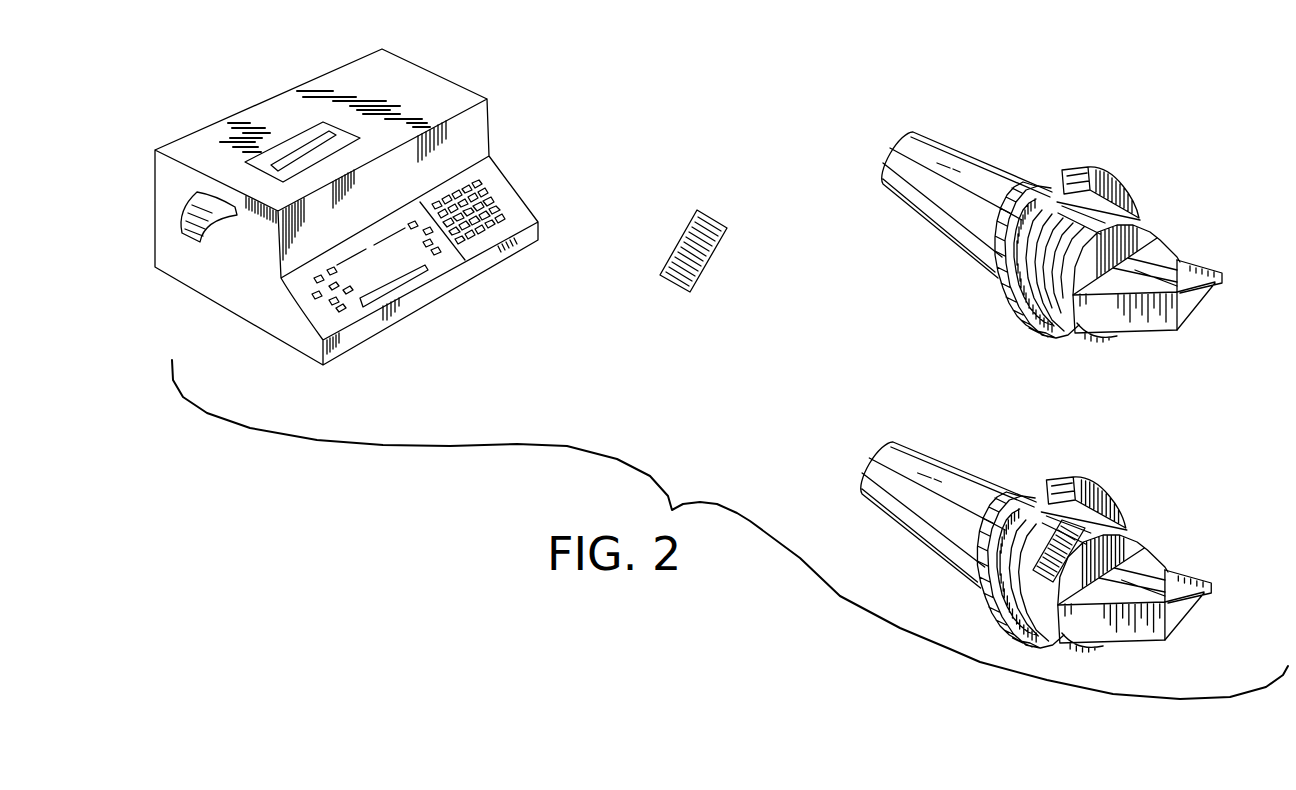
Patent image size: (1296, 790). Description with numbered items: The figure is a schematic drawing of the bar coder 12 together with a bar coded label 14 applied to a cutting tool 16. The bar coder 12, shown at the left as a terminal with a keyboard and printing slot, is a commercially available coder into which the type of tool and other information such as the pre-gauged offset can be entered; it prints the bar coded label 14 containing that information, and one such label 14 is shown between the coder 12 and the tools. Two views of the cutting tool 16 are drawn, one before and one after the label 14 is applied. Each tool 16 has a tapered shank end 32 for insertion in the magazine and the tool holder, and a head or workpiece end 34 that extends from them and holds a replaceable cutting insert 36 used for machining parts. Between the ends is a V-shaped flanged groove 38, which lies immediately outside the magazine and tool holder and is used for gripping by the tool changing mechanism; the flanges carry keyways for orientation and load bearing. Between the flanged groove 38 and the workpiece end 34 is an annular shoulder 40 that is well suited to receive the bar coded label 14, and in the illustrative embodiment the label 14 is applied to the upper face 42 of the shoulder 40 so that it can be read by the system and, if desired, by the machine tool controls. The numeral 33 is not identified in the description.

The bar coder 12 is at (414, 58).
The bar coded label 14 is at (683, 228).
The cutting tool 16 is at (1042, 156).
The tapered shank end 32 is at (945, 145).
The drive key 33 is at (1093, 508).
The head or workpiece end 34 is at (1160, 253).
The replaceable cutting insert 36 is at (1197, 263).
The V-shaped flanged groove 38 is at (1123, 190).
The annular shoulder 40 is at (1137, 223).
The upper face of the shoulder 42 is at (1040, 580).